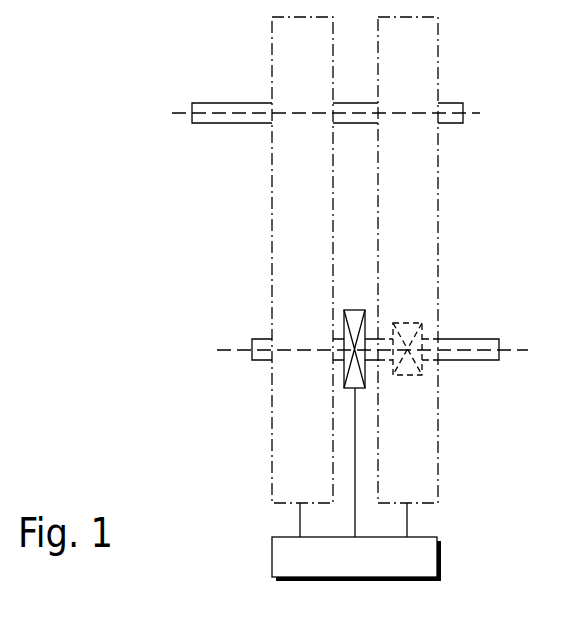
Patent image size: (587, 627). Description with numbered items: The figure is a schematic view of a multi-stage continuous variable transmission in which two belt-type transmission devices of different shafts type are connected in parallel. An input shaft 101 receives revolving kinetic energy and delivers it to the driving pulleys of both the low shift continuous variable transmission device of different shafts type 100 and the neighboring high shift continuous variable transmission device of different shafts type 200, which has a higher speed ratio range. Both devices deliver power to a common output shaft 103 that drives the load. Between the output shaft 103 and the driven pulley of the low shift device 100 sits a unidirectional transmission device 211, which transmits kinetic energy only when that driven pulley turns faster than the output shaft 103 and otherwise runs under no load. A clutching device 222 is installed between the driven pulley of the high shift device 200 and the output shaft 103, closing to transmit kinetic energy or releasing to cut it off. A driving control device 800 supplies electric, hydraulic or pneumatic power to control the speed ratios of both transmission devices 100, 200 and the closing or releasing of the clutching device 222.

The low shift continuous variable transmission device of different shafts type 100 is at (438, 57).
The high shift continuous variable transmission device of different shafts type 200 is at (272, 60).
The input shaft 101 is at (217, 103).
The output shaft 103 is at (475, 339).
The clutching device 222 is at (355, 316).
The unidirectional transmission device 211 is at (405, 323).
The driving control device 800 is at (443, 557).